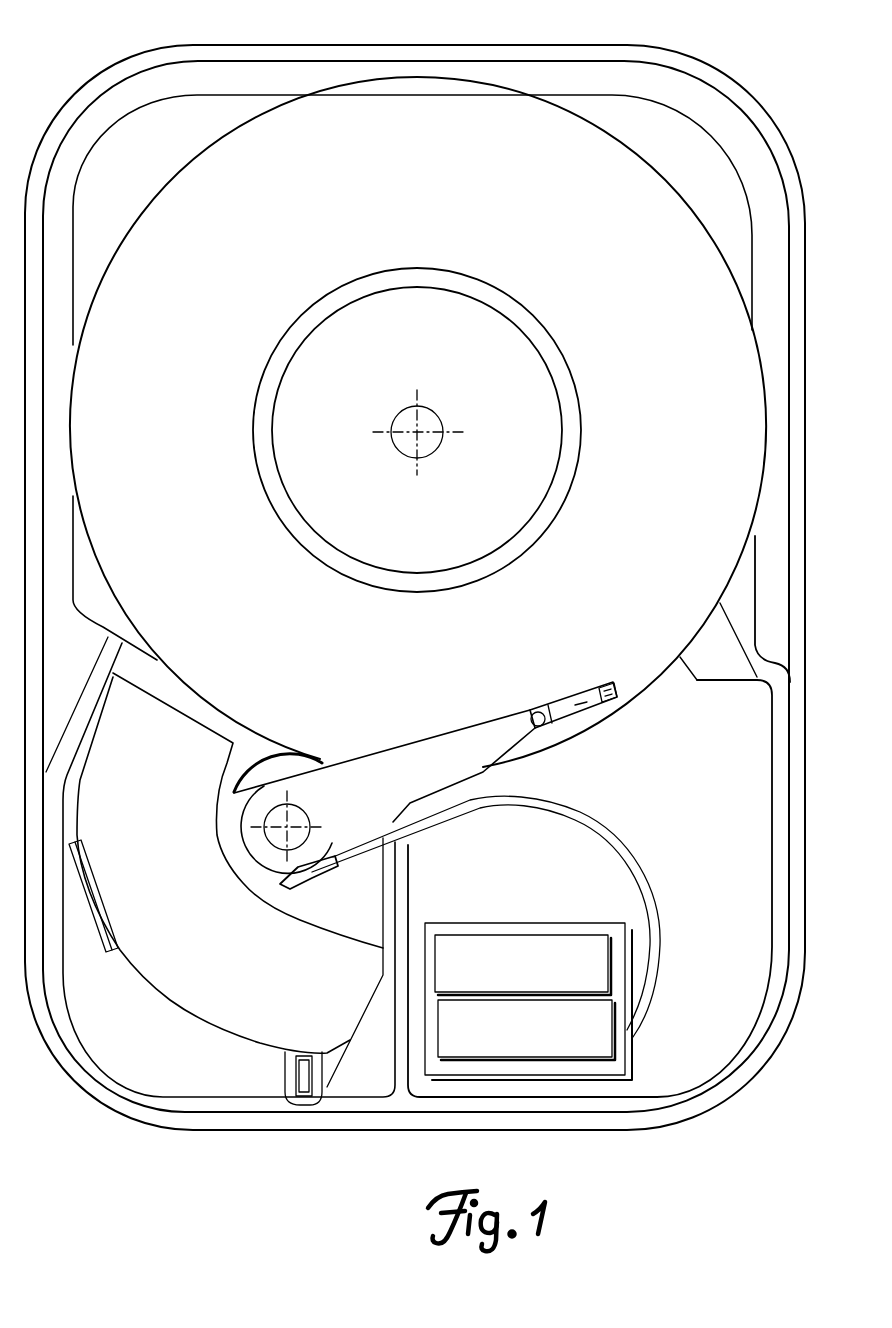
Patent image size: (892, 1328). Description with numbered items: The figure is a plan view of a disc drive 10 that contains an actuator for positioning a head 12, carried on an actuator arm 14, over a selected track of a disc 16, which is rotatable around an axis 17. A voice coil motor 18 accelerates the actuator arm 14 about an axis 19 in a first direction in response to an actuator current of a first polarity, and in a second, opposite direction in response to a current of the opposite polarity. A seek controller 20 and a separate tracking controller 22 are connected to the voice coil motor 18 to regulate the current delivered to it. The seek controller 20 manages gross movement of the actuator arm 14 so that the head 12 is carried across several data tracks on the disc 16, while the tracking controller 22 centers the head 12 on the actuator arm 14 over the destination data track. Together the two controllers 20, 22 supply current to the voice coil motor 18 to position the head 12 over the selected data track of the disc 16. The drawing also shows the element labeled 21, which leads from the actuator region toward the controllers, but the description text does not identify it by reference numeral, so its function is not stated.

The disc drive 10 is at (595, 47).
The head 12 is at (599, 685).
The actuator arm 14 is at (433, 731).
The disc 16 is at (132, 229).
The axis 17 is at (430, 425).
The voice coil motor 18 is at (143, 973).
The axis 19 is at (302, 815).
The seek controller 20 is at (527, 933).
The flex cable 21 is at (570, 811).
The tracking controller 22 is at (617, 1042).